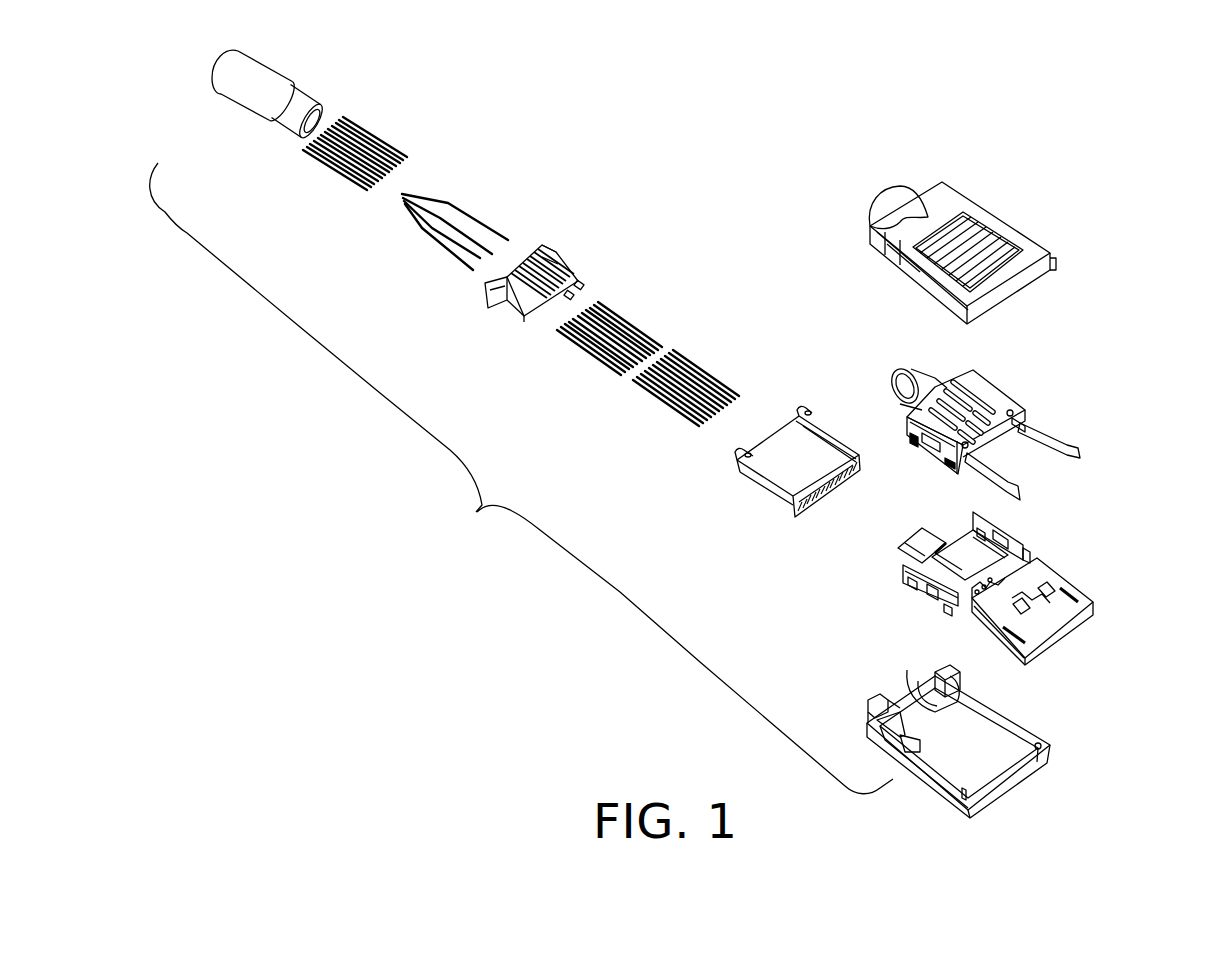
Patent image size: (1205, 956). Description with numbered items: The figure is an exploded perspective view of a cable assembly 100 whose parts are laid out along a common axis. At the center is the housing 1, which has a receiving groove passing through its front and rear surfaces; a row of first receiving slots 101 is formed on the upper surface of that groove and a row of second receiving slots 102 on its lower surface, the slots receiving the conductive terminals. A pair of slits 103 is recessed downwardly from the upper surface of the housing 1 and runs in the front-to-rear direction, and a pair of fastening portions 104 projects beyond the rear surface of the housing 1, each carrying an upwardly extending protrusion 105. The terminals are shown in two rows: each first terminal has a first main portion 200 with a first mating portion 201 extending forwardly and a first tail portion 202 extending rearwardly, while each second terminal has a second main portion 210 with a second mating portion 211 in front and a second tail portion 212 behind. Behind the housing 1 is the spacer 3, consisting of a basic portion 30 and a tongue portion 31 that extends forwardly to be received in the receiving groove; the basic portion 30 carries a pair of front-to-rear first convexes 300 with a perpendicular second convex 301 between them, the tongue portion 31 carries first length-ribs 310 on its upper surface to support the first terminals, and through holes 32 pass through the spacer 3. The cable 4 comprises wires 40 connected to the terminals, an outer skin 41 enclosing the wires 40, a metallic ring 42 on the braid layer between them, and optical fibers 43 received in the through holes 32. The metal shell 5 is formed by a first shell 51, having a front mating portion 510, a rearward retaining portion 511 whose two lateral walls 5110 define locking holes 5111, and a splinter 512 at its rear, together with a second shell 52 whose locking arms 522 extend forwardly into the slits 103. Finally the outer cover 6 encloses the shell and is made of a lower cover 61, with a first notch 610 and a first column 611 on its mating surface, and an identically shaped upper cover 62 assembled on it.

The cable assembly 100 is at (521, 478).
The housing 1 is at (759, 466).
The first receiving slots 101 is at (785, 490).
The second receiving slots 102 is at (797, 507).
The slits 103 is at (850, 407).
The fastening portions 104 is at (737, 460).
The protrusion 105 is at (787, 427).
The first main portion 200 is at (710, 371).
The first mating portion 201 is at (733, 397).
The first tail portion 202 is at (687, 353).
The second main portion 210 is at (628, 322).
The second mating portion 211 is at (657, 340).
The second tail portion 212 is at (600, 302).
The spacer 3 is at (501, 278).
The basic portion 30 is at (530, 250).
The first convexes 300 is at (496, 283).
The second convex 301 is at (520, 282).
The tongue portion 31 is at (532, 313).
The first length-ribs 310 is at (500, 298).
The through holes 32 is at (572, 282).
The cable 4 is at (270, 78).
The wires 40 is at (362, 127).
The outer skin 41 is at (240, 82).
The metallic ring 42 is at (296, 98).
The optical fibers 43 is at (450, 205).
The metal shell 5 is at (990, 579).
The first shell 51 is at (1063, 610).
The mating portion 510 is at (1058, 583).
The retaining portion 511 is at (945, 568).
The lateral walls 5110 is at (1013, 550).
The locking holes 5111 is at (927, 593).
The splinter 512 is at (920, 537).
The second shell 52 is at (977, 382).
The locking arms 522 is at (1068, 445).
The outer cover 6 is at (947, 215).
The lower cover 61 is at (983, 743).
The first notch 610 is at (880, 707).
The first column 611 is at (940, 677).
The upper cover 62 is at (973, 213).